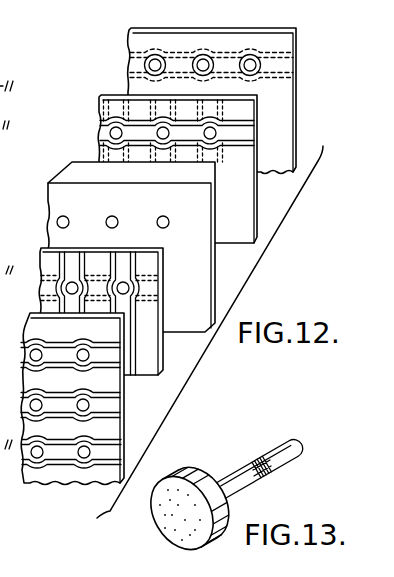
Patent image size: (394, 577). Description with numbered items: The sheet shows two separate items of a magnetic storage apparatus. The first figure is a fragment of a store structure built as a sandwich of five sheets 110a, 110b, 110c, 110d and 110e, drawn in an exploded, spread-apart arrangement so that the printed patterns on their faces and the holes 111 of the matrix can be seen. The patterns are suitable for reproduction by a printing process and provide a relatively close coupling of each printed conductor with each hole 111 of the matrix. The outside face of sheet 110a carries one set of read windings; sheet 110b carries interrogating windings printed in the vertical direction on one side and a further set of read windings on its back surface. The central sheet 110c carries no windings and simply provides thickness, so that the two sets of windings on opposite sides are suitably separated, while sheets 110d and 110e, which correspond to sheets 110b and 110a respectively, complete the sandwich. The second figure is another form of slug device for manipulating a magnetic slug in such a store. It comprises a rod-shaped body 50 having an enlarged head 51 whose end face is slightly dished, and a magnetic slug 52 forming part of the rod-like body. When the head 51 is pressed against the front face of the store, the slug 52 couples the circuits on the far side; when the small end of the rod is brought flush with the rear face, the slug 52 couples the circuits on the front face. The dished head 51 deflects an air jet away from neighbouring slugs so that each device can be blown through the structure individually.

In FIG. 12, the sheet 110a is at (64, 479).
In FIG. 12, the sheet 110b is at (147, 362).
In FIG. 12, the central sheet 110c is at (183, 315).
In FIG. 12, the sheet 110d is at (229, 230).
In FIG. 12, the sheet 110e is at (281, 128).
In FIG. 12, the hole 111 is at (257, 60).
In FIG. 13, the rod-shaped body 50 is at (301, 442).
In FIG. 13, the enlarged head 51 is at (157, 523).
In FIG. 13, the magnetic slug 52 is at (256, 462).